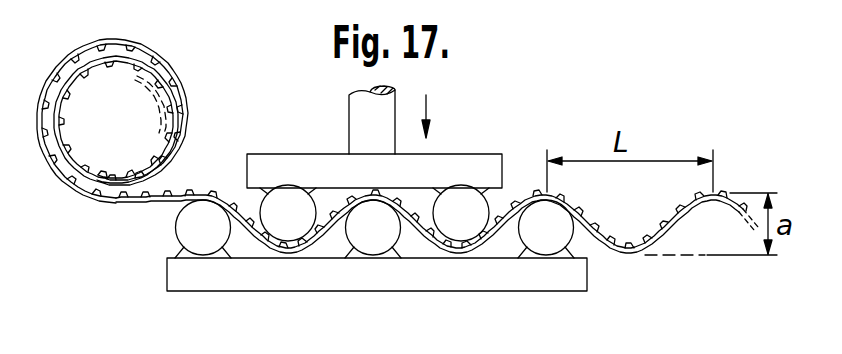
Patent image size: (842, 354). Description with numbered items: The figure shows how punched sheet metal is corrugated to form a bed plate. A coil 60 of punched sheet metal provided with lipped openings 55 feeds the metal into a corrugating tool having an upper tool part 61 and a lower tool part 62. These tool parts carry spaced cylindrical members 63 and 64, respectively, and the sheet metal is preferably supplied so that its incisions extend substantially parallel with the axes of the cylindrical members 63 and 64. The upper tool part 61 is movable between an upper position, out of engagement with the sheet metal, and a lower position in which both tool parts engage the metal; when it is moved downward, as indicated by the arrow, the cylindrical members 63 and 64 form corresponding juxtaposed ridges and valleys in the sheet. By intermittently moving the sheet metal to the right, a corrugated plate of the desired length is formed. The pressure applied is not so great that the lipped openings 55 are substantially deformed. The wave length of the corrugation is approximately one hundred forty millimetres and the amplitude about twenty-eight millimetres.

The lipped openings 55 is at (600, 227).
The coil 60 is at (160, 78).
The upper tool part 61 is at (470, 162).
The lower tool part 62 is at (493, 278).
The cylindrical members 63 is at (285, 203).
The cylindrical members 64 is at (212, 245).